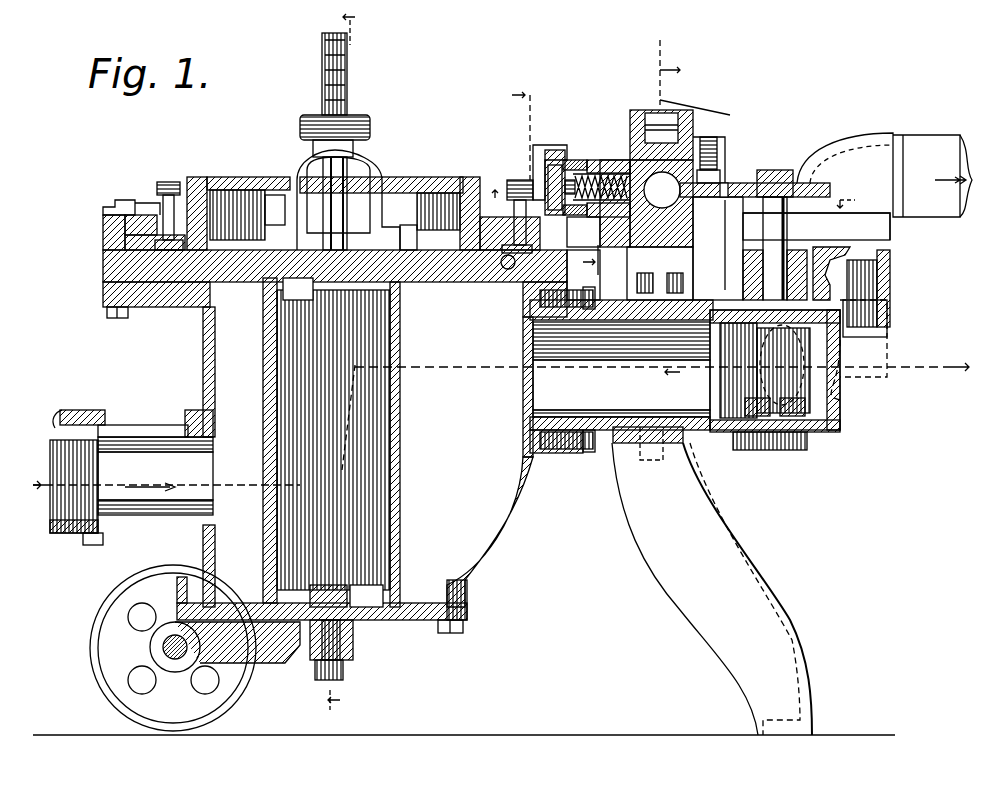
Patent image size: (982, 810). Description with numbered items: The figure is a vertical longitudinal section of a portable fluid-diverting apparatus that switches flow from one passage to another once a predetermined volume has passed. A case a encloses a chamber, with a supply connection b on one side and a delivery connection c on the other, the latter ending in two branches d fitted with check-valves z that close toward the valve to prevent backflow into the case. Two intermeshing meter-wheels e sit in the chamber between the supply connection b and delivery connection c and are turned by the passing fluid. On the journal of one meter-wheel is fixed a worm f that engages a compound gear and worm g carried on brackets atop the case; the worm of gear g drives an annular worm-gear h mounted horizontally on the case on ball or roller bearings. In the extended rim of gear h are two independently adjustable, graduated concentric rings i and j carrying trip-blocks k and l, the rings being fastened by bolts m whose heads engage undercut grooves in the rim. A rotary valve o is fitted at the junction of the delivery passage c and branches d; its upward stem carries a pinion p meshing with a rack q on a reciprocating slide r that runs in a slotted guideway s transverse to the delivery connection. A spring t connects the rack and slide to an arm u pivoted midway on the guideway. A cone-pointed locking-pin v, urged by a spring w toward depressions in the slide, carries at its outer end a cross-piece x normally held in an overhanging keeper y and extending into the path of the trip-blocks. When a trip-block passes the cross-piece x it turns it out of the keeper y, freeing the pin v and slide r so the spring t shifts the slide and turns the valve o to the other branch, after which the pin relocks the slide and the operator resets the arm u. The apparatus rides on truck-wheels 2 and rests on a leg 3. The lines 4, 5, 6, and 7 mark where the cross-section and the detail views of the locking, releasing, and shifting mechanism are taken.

The case a is at (463, 512).
The supply connection b is at (140, 437).
The delivery connection c is at (652, 369).
The branches d is at (840, 160).
The meter-wheels e is at (333, 442).
The worm f is at (300, 125).
The compound gear and worm g is at (322, 68).
The annular worm-gear h is at (207, 178).
The concentric ring i is at (120, 225).
The concentric ring j is at (162, 200).
The trip-block k is at (125, 200).
The trip-block l is at (545, 240).
The bolts m is at (172, 183).
The rotary valve o is at (775, 380).
The pinion p is at (745, 183).
The rack q is at (726, 183).
The slide r is at (660, 208).
The guideway s is at (628, 170).
The spring t is at (710, 137).
The arm u is at (660, 108).
The locking-pin v is at (580, 162).
The spring w is at (623, 205).
The cross-piece x is at (540, 165).
The keeper y is at (550, 148).
The check-valves z is at (880, 297).
The truck-wheels 2 is at (97, 610).
The leg 3 is at (489, 549).
The section line 4 4 is at (332, 364).
The section line 5 5 is at (561, 180).
The section line 6 6 is at (670, 194).
The section line 7 7 is at (687, 201).